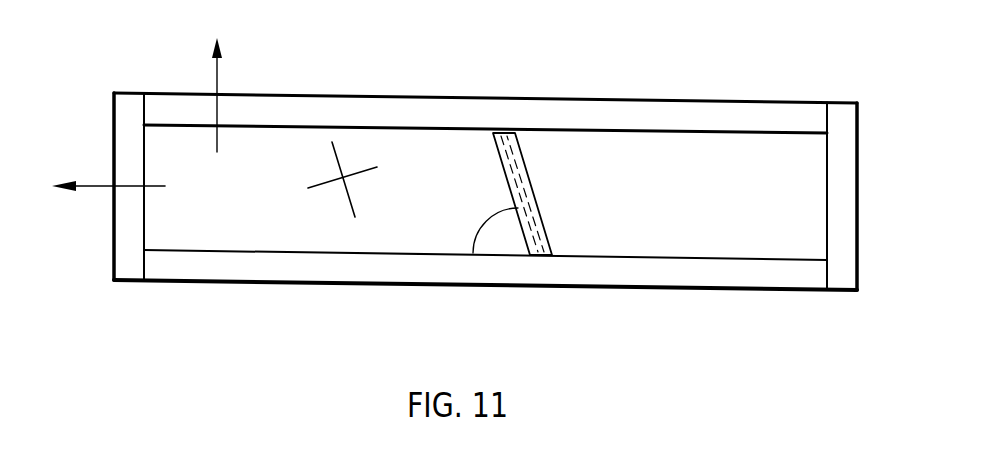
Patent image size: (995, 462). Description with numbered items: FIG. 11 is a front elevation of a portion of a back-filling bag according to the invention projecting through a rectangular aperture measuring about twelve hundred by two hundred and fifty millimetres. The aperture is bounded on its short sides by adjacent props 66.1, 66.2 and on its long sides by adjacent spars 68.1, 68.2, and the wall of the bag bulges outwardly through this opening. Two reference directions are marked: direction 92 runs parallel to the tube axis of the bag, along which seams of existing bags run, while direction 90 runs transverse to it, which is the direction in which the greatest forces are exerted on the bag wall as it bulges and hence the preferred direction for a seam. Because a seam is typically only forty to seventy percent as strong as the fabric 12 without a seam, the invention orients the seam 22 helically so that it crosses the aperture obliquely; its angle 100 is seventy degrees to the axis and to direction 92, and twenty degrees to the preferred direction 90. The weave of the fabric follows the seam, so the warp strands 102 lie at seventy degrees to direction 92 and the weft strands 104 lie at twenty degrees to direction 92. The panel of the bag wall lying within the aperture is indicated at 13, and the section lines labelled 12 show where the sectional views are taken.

The fabric 12 is at (638, 201).
The tile 13 is at (485, 248).
The seam 22 is at (505, 104).
The prop 66.1 is at (130, 260).
The prop 66.2 is at (843, 272).
The spar 68.1 is at (717, 120).
The spar 68.2 is at (768, 272).
The transverse direction 90 is at (220, 112).
The axial direction 92 is at (90, 185).
The seam angle 100 is at (508, 230).
The warp strands 102 is at (332, 163).
The weft strands 104 is at (328, 185).